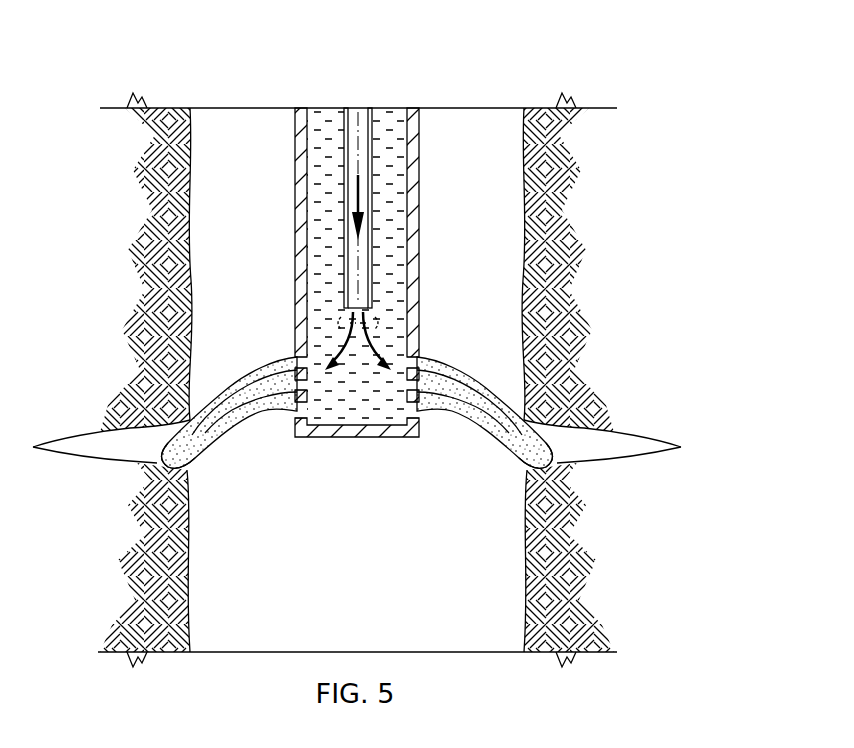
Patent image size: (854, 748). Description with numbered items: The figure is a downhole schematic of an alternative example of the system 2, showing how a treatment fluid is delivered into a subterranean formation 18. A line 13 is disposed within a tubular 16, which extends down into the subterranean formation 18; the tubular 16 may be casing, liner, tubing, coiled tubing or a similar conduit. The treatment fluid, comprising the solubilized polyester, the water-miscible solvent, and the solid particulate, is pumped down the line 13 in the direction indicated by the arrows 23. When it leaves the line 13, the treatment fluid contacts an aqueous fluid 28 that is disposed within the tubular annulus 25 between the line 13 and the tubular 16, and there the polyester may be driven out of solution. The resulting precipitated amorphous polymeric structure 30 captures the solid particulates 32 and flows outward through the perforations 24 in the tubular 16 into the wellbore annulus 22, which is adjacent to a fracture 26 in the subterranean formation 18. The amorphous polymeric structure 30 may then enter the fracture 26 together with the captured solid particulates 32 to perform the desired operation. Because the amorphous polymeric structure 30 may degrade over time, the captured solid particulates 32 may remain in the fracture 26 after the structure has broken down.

The system 2 is at (485, 70).
The line 13 is at (343, 164).
The tubular 16 is at (300, 213).
The subterranean formation 18 is at (607, 576).
The wellbore annulus 22 is at (187, 268).
The arrows 23 is at (359, 203).
The perforations 24 is at (304, 355).
The tubular annulus 25 is at (408, 145).
The fracture 26 is at (598, 463).
The aqueous fluid 28 is at (403, 270).
The amorphous polymeric structure 30 is at (226, 387).
The solid particulates 32 is at (198, 460).